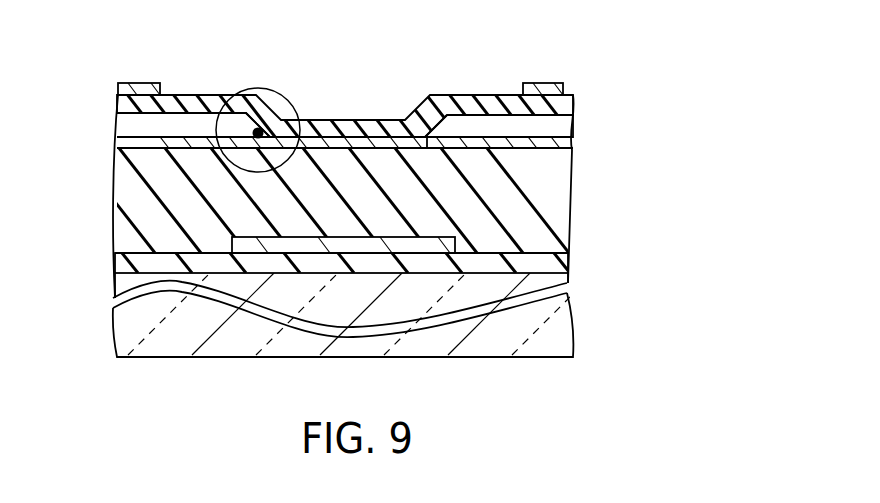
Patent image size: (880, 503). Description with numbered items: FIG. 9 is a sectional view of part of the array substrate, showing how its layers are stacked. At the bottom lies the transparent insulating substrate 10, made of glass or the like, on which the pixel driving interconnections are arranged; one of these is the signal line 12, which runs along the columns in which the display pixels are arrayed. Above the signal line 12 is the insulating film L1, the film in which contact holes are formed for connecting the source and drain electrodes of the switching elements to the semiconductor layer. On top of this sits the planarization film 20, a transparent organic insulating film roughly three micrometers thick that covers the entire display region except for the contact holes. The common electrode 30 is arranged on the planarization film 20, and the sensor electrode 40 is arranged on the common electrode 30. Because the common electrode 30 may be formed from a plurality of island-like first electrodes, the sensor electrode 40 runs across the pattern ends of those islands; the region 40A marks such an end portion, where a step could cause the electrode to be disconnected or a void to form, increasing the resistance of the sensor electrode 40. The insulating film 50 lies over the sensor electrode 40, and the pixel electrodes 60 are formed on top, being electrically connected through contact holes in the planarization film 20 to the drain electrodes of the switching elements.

The transparent insulating substrate 10 is at (568, 335).
The signal line 12 is at (245, 221).
The insulating film L1 is at (570, 263).
The planarization film 20 is at (568, 212).
The common electrode 30 is at (113, 146).
The sensor electrode 40 is at (557, 132).
The edge portion of insulating film 40A is at (285, 97).
The insulating film 50 is at (573, 104).
The pixel electrode 60 is at (152, 88).